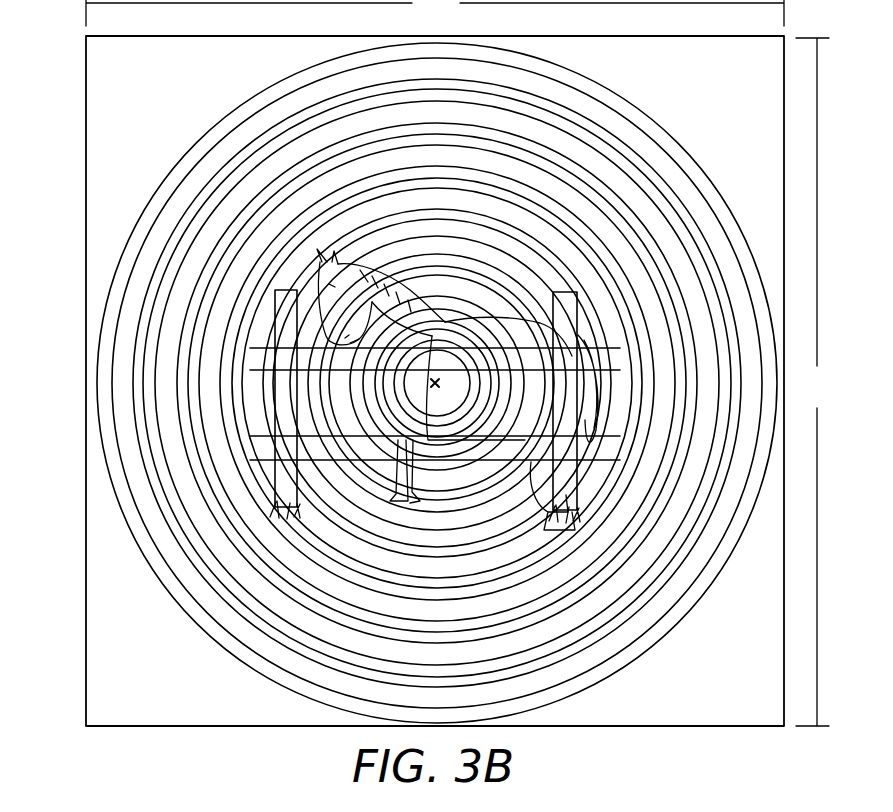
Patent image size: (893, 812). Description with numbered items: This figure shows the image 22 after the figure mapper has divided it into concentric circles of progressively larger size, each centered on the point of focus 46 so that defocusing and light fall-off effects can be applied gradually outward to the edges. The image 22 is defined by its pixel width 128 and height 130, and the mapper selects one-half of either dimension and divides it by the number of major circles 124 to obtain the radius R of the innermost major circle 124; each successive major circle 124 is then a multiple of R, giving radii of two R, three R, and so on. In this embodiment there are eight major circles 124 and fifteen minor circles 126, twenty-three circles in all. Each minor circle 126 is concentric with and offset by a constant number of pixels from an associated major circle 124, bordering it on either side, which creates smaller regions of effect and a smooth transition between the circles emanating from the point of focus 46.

The image 22 is at (86, 519).
The point of focus 46 is at (438, 378).
The major circle 124 is at (235, 167).
The minor circle 126 is at (215, 573).
The width 128 is at (435, 13).
The height 130 is at (816, 382).